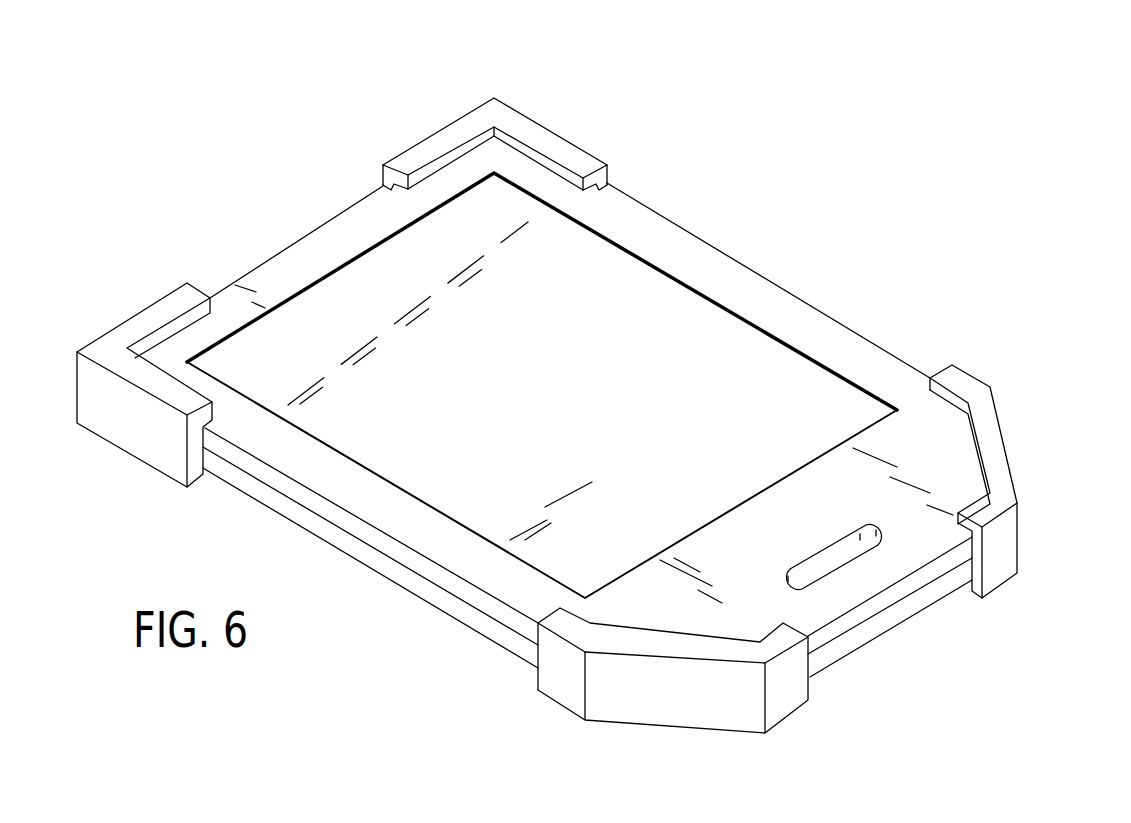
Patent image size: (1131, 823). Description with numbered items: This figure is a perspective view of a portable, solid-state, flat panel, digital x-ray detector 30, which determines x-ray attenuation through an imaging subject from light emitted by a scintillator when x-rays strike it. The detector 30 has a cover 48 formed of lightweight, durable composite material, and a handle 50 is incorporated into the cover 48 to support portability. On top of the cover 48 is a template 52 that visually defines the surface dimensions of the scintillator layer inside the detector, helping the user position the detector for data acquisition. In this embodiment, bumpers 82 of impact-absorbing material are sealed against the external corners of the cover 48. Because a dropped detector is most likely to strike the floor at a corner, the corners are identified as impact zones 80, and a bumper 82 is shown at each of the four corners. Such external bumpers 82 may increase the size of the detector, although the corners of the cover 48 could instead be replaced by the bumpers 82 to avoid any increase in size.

The x-ray detector 30 is at (937, 283).
The cover 48 is at (908, 525).
The handle 50 is at (833, 558).
The template 52 is at (645, 303).
The impact zones 80 is at (593, 417).
The bumpers 82 is at (515, 122).